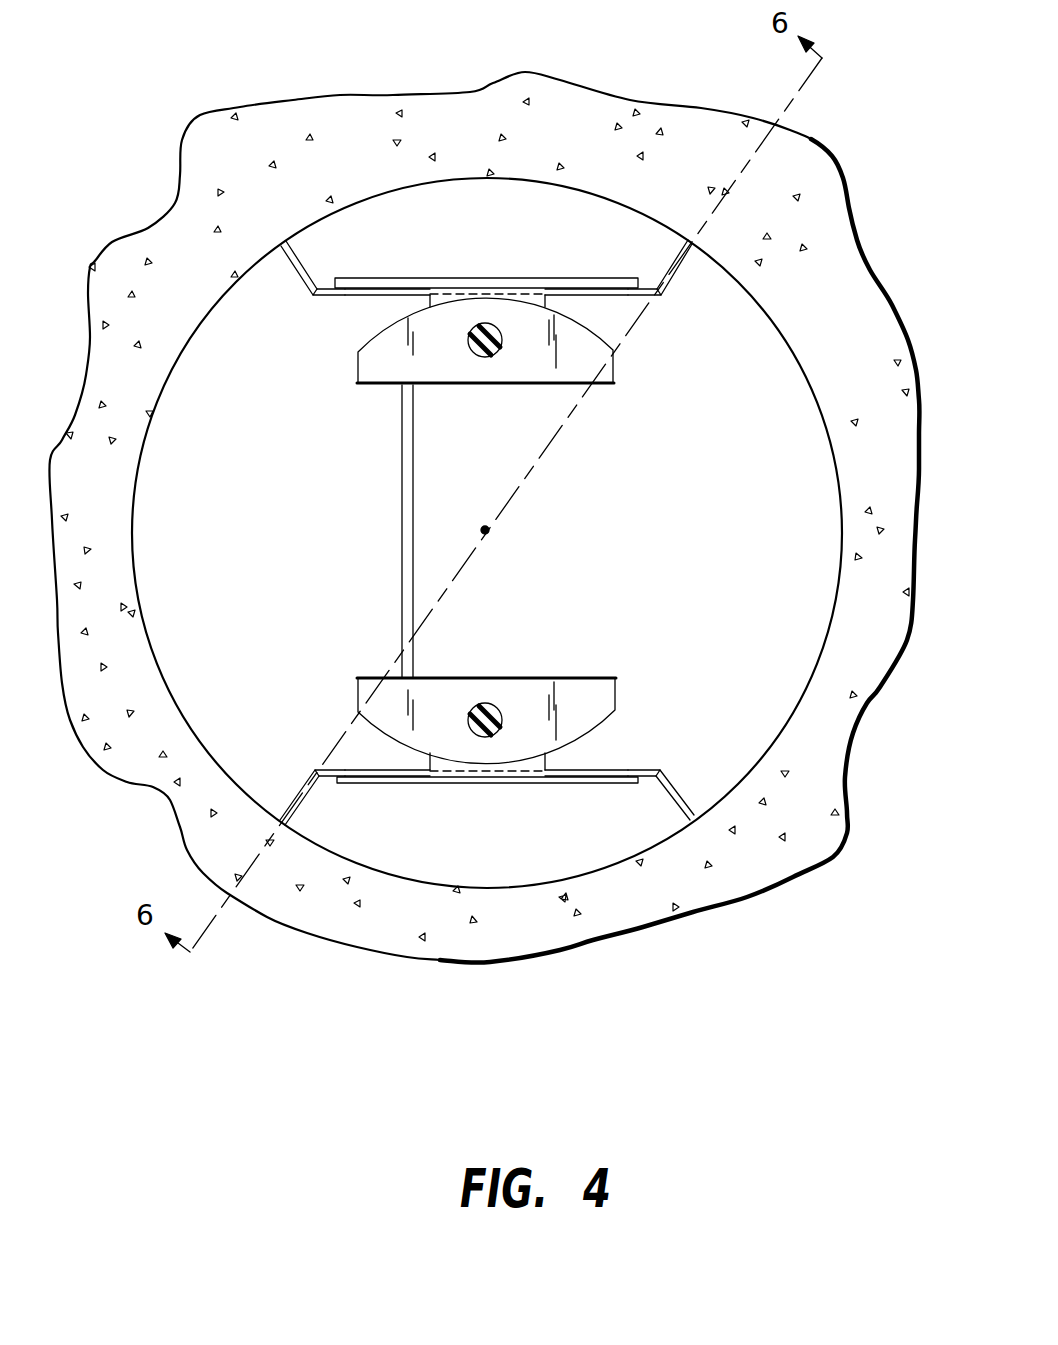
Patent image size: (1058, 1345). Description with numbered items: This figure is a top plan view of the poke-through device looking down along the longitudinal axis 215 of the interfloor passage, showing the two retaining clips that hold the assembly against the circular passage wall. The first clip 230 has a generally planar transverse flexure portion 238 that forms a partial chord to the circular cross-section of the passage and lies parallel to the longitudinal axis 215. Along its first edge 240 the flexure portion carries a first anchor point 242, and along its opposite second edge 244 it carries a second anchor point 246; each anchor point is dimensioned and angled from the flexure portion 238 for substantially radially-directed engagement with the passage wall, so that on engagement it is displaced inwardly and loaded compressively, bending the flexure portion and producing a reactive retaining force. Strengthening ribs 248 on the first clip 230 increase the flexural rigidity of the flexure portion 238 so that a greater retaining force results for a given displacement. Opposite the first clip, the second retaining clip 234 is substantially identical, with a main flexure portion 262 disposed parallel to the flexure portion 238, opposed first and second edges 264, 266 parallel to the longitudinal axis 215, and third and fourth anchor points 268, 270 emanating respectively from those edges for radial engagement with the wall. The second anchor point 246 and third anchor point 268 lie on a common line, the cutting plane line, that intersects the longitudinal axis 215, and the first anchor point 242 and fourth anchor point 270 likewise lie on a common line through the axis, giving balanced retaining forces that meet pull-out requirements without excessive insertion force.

The longitudinal axis 215 is at (490, 528).
The first clip 230 is at (603, 763).
The second retaining clip 234 is at (388, 298).
The transverse flexure portion 238 is at (628, 765).
The first edge 240 is at (660, 767).
The first anchor point 242 is at (693, 800).
The second edge 244 is at (312, 767).
The second anchor point 246 is at (290, 793).
The strengthening rib 248 is at (360, 787).
The main flexure portion 262 is at (583, 278).
The first edge 264 is at (658, 296).
The second edge 266 is at (308, 298).
The third anchor point 268 is at (690, 252).
The fourth anchor point 270 is at (287, 265).